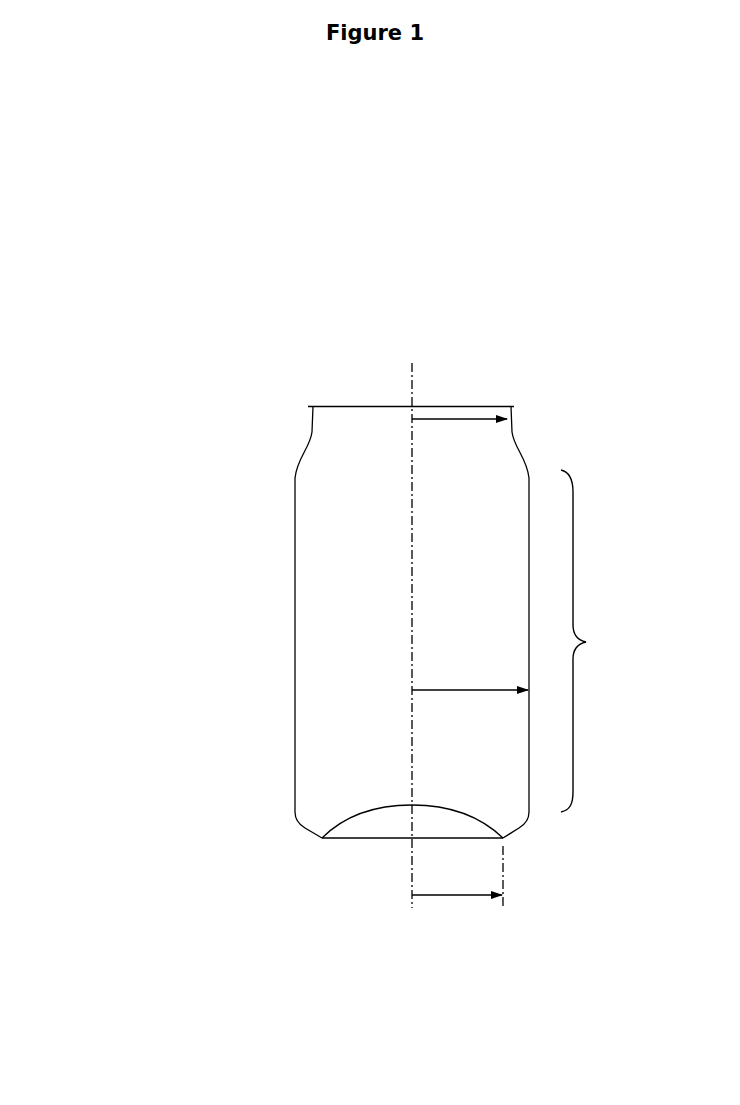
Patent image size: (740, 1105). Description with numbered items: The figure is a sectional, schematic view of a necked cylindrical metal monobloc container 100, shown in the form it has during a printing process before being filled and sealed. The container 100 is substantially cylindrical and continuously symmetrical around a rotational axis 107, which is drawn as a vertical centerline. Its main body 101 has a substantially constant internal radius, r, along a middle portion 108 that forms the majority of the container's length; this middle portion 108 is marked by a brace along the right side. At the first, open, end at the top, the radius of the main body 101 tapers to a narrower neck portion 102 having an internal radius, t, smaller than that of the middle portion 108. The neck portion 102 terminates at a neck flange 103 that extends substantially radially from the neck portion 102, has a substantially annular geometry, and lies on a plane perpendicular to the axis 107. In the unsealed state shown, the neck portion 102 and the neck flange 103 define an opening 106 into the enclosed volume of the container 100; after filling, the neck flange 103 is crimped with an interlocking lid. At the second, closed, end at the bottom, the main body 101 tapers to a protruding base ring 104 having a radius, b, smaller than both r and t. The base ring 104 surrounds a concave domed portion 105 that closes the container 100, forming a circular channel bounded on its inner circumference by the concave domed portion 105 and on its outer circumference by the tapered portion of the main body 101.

The container 100 is at (152, 568).
The main body 101 is at (313, 639).
The neck portion 102 is at (310, 437).
The neck flange 103 is at (513, 406).
The base ring 104 is at (322, 840).
The concave domed portion 105 is at (377, 832).
The opening 106 is at (462, 392).
The rotational axis 107 is at (402, 380).
The middle portion 108 is at (603, 641).